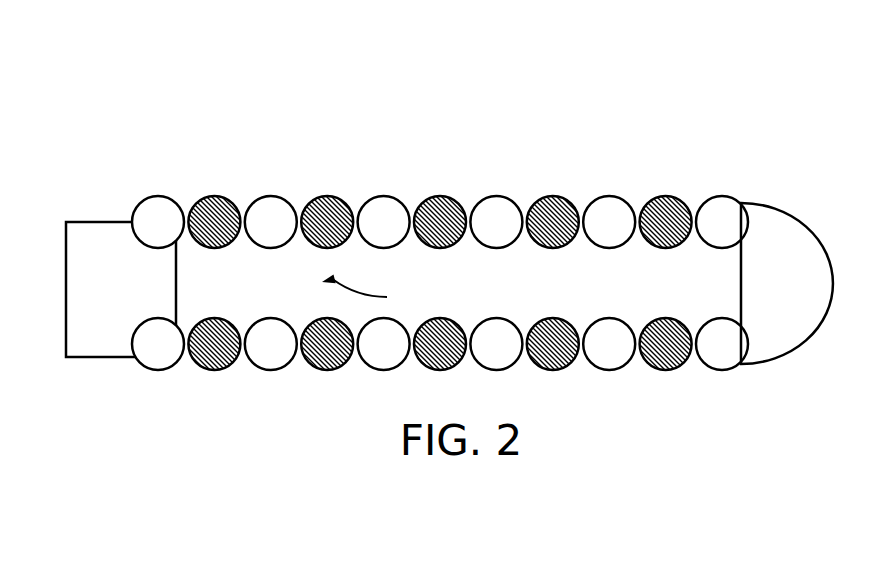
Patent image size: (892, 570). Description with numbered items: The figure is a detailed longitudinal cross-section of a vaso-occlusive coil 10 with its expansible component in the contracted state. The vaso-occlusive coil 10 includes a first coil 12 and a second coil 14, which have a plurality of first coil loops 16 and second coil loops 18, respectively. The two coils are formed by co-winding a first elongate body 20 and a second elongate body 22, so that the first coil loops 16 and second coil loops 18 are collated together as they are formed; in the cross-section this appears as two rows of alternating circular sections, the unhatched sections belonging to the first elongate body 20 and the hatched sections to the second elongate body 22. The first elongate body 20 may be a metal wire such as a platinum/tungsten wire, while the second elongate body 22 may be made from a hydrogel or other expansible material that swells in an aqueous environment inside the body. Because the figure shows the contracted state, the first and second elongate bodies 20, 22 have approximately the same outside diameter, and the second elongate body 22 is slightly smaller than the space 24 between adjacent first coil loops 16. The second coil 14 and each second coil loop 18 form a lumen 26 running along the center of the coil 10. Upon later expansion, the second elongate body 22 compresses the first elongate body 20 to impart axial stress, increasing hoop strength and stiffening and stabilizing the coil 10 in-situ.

The vaso-occlusive coil 10 is at (364, 71).
The first coil 12 is at (161, 187).
The second coil 14 is at (670, 187).
The first coil loops 16 is at (243, 187).
The second coil loops 18 is at (528, 190).
The first elongate body 20 is at (378, 207).
The second elongate body 22 is at (446, 206).
The space between first coil loops 24 is at (531, 315).
The lumen 26 is at (369, 293).